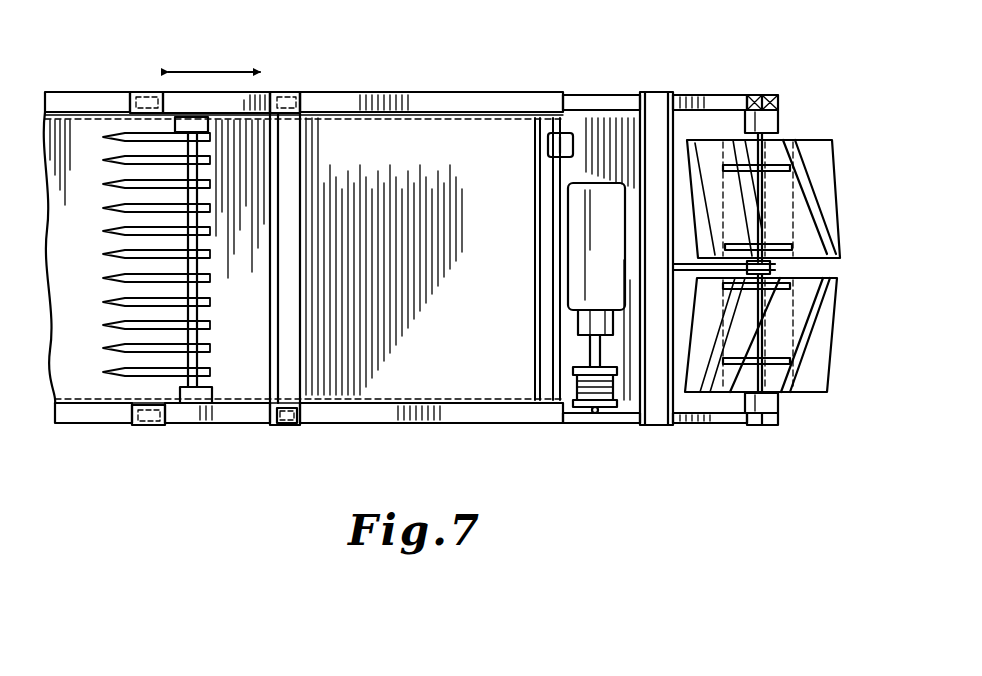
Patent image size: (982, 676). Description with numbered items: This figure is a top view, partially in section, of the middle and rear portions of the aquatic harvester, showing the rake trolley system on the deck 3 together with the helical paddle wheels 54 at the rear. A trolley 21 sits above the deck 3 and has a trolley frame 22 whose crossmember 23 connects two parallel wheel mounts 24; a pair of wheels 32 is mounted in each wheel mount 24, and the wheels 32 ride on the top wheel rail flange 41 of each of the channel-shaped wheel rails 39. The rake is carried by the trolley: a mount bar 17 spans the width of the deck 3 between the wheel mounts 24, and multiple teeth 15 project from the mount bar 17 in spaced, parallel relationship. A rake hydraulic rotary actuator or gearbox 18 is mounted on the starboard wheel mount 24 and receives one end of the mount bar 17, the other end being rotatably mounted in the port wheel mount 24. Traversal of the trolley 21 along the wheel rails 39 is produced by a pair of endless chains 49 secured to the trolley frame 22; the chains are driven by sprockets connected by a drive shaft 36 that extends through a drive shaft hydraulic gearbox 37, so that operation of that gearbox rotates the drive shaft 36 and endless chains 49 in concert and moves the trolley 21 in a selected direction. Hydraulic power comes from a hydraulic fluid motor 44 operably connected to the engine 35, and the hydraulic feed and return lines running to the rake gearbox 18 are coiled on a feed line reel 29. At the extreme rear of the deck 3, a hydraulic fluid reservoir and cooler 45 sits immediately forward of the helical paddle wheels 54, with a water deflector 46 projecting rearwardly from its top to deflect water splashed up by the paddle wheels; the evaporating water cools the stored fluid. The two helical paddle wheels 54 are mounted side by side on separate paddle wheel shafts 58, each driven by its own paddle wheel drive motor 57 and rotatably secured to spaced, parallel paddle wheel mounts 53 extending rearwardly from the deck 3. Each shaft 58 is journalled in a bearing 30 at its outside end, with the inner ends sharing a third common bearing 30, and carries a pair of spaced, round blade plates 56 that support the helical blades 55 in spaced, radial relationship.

The deck 3 is at (452, 211).
The teeth 15 is at (136, 232).
The mount bar 17 is at (197, 264).
The rake hydraulic rotary actuator or gearbox 18 is at (185, 125).
The trolley 21 is at (282, 92).
The trolley frame 22 is at (212, 450).
The crossmember 23 is at (278, 372).
The wheel mounts 24 is at (142, 92).
The feed line reel 29 is at (585, 375).
The bearing 30 is at (750, 95).
The wheels 32 is at (147, 100).
The engine 35 is at (580, 232).
The drive shaft 36 is at (553, 195).
The drive shaft hydraulic gearbox 37 is at (548, 145).
The wheel rails 39 is at (428, 94).
The top wheel rail flange 41 is at (66, 95).
The hydraulic fluid motor 44 is at (585, 323).
The hydraulic fluid reservoir and cooler 45 is at (641, 410).
The water deflector 46 is at (663, 100).
The endless chains 49 is at (475, 119).
The paddle wheel mounts 53 is at (700, 100).
The helical paddle wheels 54 is at (820, 138).
The helical blades 55 is at (820, 190).
The blade plates 56 is at (795, 152).
The paddle wheel drive motors 57 is at (778, 120).
The paddle wheel shafts 58 is at (750, 234).